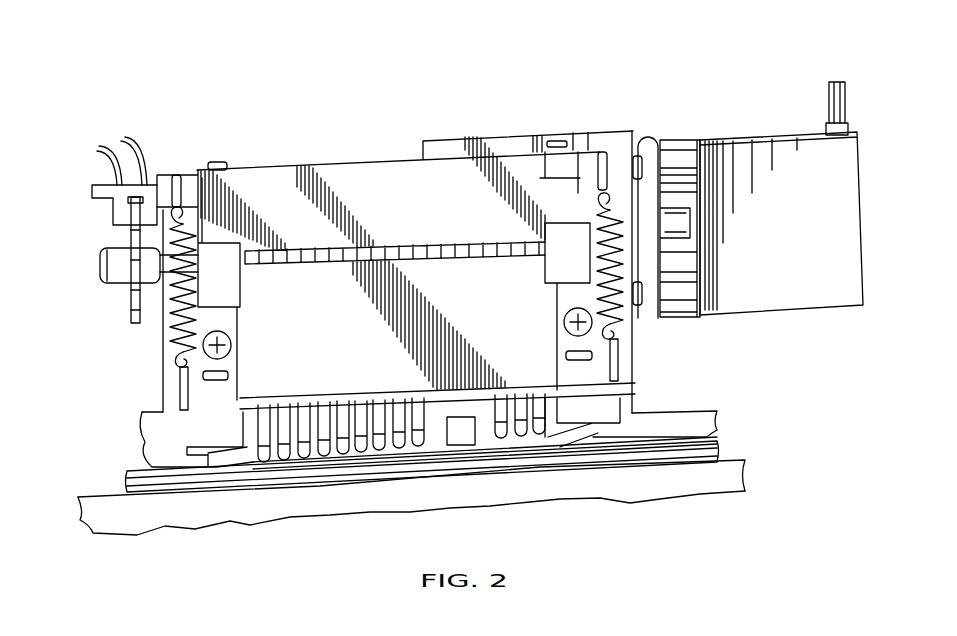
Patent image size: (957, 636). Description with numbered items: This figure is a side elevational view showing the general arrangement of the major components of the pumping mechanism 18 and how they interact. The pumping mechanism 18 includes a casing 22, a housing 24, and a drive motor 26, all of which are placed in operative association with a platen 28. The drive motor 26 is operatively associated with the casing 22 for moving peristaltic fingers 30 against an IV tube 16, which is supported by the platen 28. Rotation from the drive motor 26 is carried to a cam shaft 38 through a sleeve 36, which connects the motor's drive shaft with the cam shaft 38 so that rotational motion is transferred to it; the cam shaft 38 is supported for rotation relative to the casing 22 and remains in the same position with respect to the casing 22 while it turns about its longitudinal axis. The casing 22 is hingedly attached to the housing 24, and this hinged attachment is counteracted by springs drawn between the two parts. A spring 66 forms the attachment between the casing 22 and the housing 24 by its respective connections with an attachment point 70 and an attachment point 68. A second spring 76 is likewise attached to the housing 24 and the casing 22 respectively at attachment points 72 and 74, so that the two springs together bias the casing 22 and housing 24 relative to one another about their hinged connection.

The IV tube 16 is at (152, 481).
The pumping mechanism 18 is at (572, 83).
The casing 22 is at (340, 83).
The housing 24 is at (748, 350).
The drive motor 26 is at (820, 72).
The platen 28 is at (68, 490).
The peristaltic fingers 30 is at (243, 535).
The sleeve 36 is at (677, 223).
The cam shaft 38 is at (137, 308).
The spring 66 is at (620, 222).
The attachment point 68 is at (622, 335).
The attachment point 70 is at (604, 188).
The attachment point 72 is at (170, 373).
The attachment point 74 is at (177, 212).
The second spring 76 is at (170, 312).